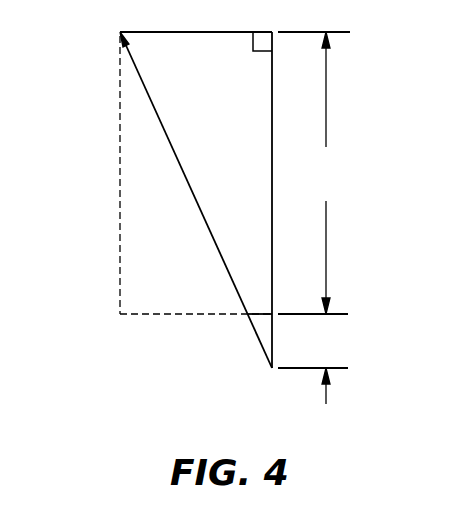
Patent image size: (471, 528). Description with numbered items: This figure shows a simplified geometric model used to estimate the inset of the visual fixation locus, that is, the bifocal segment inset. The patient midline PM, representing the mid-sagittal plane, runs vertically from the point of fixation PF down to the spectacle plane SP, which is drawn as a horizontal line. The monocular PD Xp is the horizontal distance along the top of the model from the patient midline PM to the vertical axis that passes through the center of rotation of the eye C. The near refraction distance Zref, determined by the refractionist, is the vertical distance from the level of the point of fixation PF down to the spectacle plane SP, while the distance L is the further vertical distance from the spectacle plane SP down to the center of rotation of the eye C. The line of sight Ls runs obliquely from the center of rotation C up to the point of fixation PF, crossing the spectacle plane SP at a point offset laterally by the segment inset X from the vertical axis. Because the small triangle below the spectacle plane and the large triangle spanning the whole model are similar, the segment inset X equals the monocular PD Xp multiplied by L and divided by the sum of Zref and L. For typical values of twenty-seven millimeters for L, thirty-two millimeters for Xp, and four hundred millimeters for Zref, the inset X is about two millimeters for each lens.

The Point of Fixation PF is at (117, 31).
The Patient Midline PM is at (118, 168).
The Spectacle Plane SP is at (117, 314).
The monocular PD Xp is at (196, 16).
The near refraction distance Zref is at (314, 173).
The line of sight Ls is at (213, 247).
The segment inset X is at (258, 299).
The distance from spectacle plane to center of rotation of the eye L is at (313, 368).
The Center of rotation of the eye C is at (265, 372).